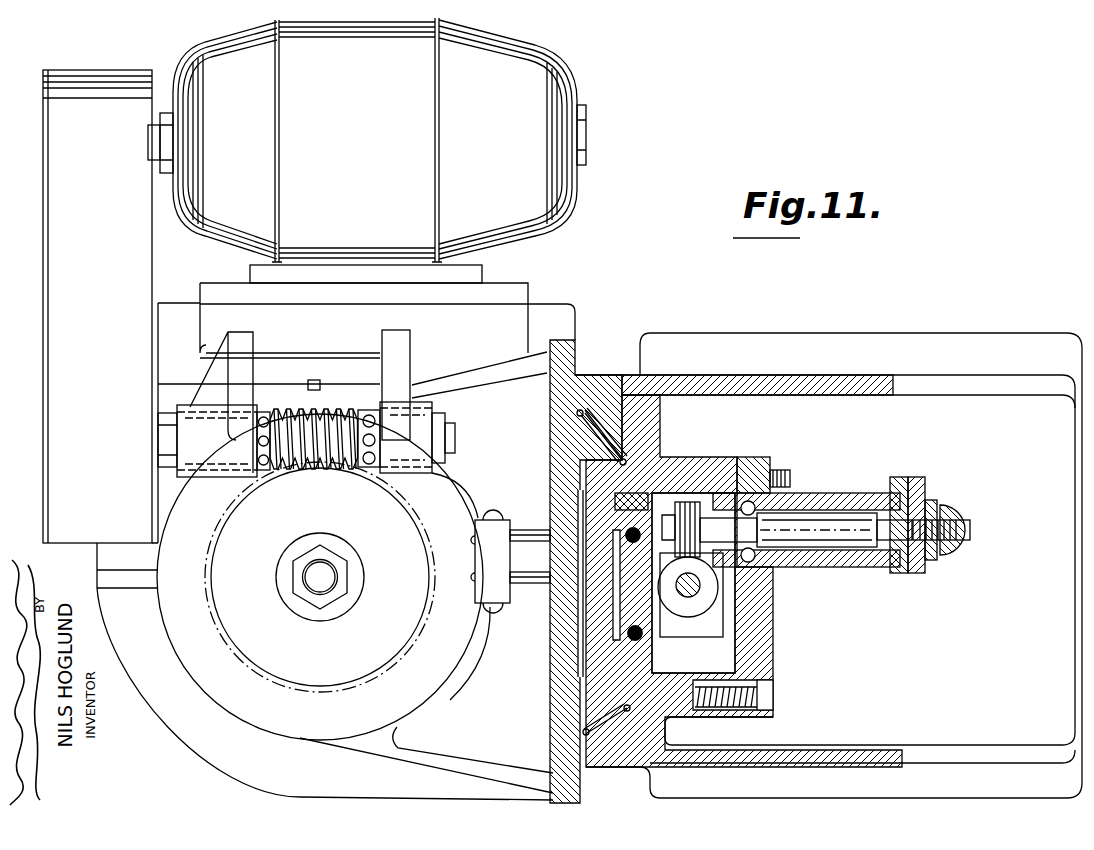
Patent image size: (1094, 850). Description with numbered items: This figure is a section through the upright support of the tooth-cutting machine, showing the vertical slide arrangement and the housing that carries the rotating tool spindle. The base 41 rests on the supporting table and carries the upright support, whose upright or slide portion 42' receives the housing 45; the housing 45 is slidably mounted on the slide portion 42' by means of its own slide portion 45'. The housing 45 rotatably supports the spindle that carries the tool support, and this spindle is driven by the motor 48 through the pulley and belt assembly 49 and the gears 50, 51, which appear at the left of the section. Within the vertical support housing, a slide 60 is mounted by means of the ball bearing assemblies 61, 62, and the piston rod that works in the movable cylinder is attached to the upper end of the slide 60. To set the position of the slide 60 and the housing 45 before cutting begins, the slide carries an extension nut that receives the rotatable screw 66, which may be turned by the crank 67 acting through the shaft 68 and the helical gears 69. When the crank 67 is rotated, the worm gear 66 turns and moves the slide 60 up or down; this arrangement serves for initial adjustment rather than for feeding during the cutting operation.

The base 41 is at (987, 343).
The upright or slide portion 42' is at (705, 586).
The housing 45 is at (362, 558).
The slide portion 45' is at (601, 405).
The motor 48 is at (556, 75).
The pulley and belt assembly 49 is at (48, 402).
The gear 50 is at (332, 408).
The gear 51 is at (212, 625).
The slide 60 is at (640, 590).
The ball bearing assembly 61 is at (663, 541).
The ball bearing assembly 62 is at (645, 636).
The rotatable screw 66 is at (712, 620).
The crank 67 is at (962, 510).
The shaft 68 is at (840, 520).
The helical gears 69 is at (690, 503).